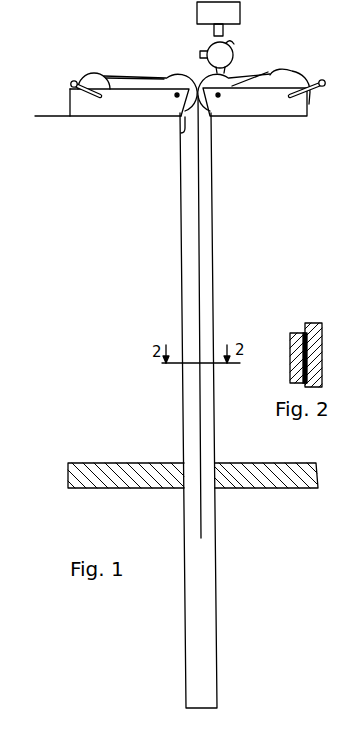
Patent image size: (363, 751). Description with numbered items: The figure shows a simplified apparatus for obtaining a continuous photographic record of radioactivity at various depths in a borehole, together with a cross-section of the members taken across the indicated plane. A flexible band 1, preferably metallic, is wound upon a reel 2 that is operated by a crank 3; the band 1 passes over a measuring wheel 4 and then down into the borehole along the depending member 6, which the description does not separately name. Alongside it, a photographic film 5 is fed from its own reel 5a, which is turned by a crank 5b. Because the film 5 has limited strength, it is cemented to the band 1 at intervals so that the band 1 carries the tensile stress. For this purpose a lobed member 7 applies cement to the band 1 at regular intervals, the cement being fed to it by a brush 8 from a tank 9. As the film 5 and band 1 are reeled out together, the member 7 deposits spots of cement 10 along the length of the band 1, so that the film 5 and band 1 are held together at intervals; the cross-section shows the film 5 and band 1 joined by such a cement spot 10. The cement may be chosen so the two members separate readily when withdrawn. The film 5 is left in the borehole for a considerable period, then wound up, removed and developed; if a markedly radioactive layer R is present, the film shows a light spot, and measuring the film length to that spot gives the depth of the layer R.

In FIG. 1, the flexible band 1 is at (267, 72).
In FIG. 2, the flexible band 1 is at (324, 350).
In FIG. 1, the reel 2 is at (300, 72).
In FIG. 1, the crank 3 is at (325, 86).
In FIG. 1, the measuring wheel 4 is at (195, 75).
In FIG. 1, the photographic film 5 is at (146, 75).
In FIG. 2, the photographic film 5 is at (290, 352).
In FIG. 1, the reel 5a is at (96, 74).
In FIG. 1, the crank 5b is at (70, 84).
In FIG. 1, the post 6 is at (181, 133).
In FIG. 1, the lobed member 7 is at (234, 54).
In FIG. 1, the brush 8 is at (224, 35).
In FIG. 1, the tank 9 is at (218, 19).
In FIG. 2, the spots of cement 10 is at (305, 333).
In FIG. 1, the radioactive layer R is at (203, 475).